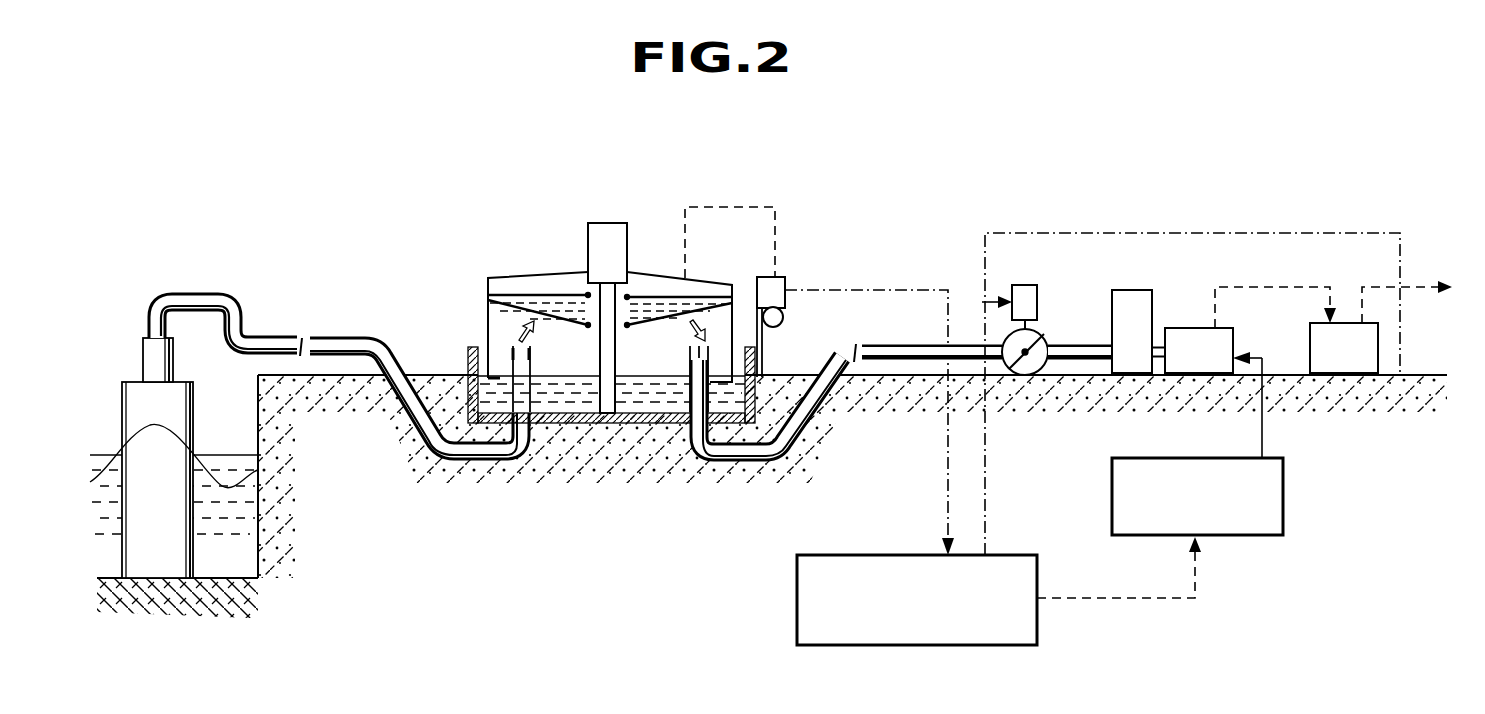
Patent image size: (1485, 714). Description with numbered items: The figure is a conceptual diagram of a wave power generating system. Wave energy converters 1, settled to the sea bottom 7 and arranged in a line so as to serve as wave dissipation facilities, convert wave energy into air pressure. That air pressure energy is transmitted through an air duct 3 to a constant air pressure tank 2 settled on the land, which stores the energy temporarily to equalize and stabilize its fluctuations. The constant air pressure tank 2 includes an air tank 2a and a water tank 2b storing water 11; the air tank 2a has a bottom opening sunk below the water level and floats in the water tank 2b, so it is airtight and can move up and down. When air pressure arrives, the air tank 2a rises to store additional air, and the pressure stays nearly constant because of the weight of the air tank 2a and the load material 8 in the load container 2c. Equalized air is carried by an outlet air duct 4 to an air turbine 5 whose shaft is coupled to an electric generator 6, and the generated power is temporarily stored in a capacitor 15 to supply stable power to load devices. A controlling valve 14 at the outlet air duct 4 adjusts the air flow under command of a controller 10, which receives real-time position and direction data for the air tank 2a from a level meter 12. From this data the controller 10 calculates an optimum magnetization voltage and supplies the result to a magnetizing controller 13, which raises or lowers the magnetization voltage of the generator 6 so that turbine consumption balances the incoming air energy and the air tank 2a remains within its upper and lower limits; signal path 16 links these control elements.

The wave energy converter 1 is at (110, 405).
The constant air pressure tank 2 is at (568, 281).
The air tank 2a is at (487, 325).
The water tank 2b is at (466, 366).
The load container 2c is at (700, 286).
The air duct 3 is at (343, 338).
The outlet air duct 4 is at (830, 362).
The air turbine 5 is at (1130, 291).
The electric generator 6 is at (1185, 329).
The sea bottom 7 is at (108, 575).
The load material 8 is at (651, 298).
The controller 10 is at (918, 648).
The water 11 is at (563, 367).
The level meter 12 is at (777, 290).
The magnetizing controller 13 is at (1288, 497).
The controlling valve 14 is at (1042, 345).
The capacitor 15 is at (1346, 324).
The signal line 16 is at (1281, 232).